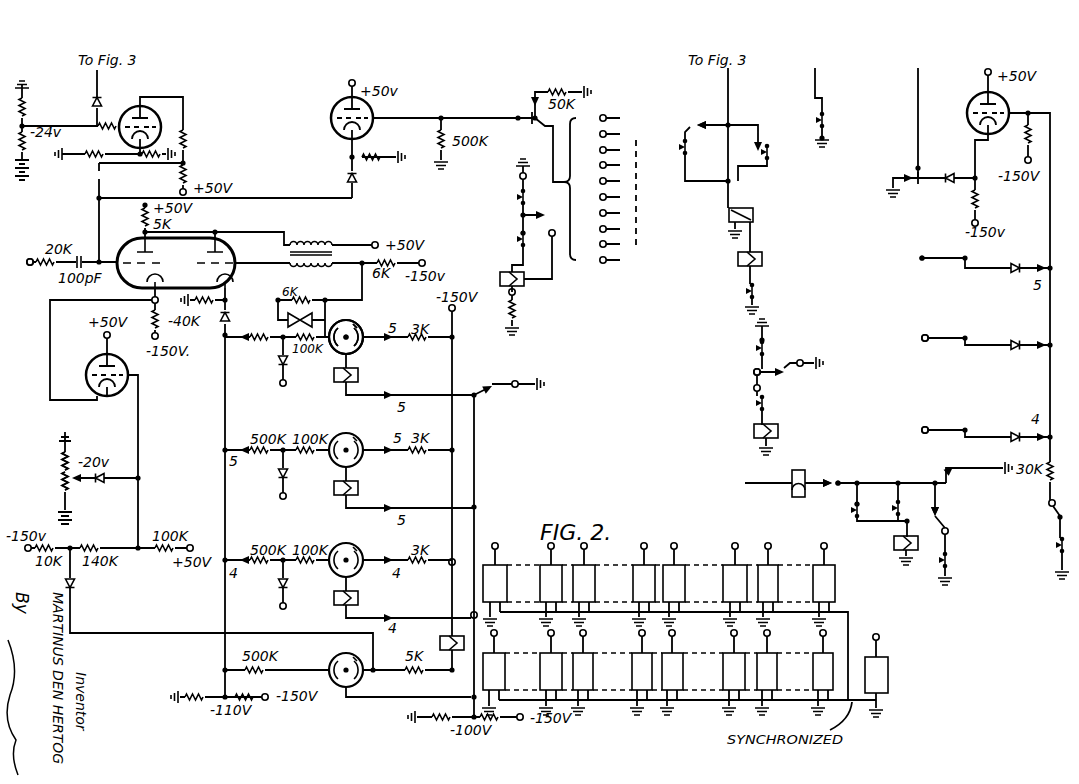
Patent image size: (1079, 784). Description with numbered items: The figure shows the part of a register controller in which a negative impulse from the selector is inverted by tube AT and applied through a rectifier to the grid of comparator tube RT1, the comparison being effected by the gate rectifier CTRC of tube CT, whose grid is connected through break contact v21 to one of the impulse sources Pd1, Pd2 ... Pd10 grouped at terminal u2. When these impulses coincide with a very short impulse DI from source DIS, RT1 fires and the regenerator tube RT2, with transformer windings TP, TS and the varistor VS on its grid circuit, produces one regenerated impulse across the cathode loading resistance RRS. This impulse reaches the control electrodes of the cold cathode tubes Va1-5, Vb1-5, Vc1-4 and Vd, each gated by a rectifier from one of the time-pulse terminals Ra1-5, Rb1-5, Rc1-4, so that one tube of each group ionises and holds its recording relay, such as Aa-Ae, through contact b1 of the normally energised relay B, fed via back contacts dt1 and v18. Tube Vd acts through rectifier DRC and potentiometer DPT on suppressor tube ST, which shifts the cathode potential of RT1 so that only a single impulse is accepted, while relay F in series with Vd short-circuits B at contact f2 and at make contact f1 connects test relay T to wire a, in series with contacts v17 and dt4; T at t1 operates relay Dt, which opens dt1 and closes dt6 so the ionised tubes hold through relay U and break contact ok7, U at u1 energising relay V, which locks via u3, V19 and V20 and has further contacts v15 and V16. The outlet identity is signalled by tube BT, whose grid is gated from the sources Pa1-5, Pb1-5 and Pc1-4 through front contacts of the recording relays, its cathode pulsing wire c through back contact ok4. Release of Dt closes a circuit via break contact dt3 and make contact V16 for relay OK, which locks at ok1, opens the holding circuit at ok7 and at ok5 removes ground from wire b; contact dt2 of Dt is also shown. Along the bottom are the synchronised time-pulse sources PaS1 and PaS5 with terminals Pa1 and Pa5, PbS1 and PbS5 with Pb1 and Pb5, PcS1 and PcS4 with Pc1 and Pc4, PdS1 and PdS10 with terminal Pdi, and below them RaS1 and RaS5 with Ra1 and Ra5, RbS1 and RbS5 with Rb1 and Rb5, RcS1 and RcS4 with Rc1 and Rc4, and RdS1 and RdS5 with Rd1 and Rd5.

The input tube with diode AT is at (127, 110).
The first triode of double tube RT1 is at (169, 254).
The second triode of double tube RT2 is at (234, 262).
The input terminal / dial input DI is at (459, 451).
The start tube ST is at (91, 375).
The pulse transformer TP is at (311, 243).
The transformer secondary resistor TS is at (307, 286).
The voltage stabiliser (bidirectional diode) VS is at (278, 319).
The register relay thyratron RRS is at (351, 318).
The thyratrons Va1 to Va5 Va1-5 is at (372, 341).
The relays Aa to Ae Aa-Ae is at (358, 375).
The terminals Ra1 to Ra5 Ra1-5 is at (287, 380).
The thyratrons Vb1 to Vb5 Vb1-5 is at (356, 440).
The terminals Rb1 to Rb5 Rb1-5 is at (287, 493).
The thyratrons Vc1 to Vc4 Vc1-4 is at (358, 551).
The terminals Rc1 to Rc4 Rc1-4 is at (294, 602).
The thyratron Vd is at (346, 661).
The relay F is at (440, 637).
The potentiometer DPT is at (72, 546).
The diode DRC is at (92, 586).
The control tube CT is at (335, 118).
The control tube diode CTRC is at (377, 180).
The contact v21 is at (544, 119).
The terminal Pd1 is at (627, 117).
The terminal Pd2 is at (628, 135).
The terminal Pd10 is at (730, 409).
The terminal group u2 is at (654, 194).
The contact v18 is at (538, 196).
The contact f2 is at (536, 239).
The contact dt1 is at (496, 229).
The relay B is at (500, 282).
The contact b1 is at (513, 392).
The lead a to Fig. 3 a is at (736, 84).
The lead b is at (823, 83).
The lead c is at (926, 84).
The contact v17 is at (710, 117).
The contact f1 is at (700, 153).
The contact dt4 is at (782, 154).
The contact ok5 is at (838, 123).
The relay T is at (752, 215).
The relay Dt is at (764, 256).
The contact t1 is at (766, 289).
The contact ok4 is at (933, 188).
The tube BT is at (1001, 110).
The terminals Pa1 to Pa5 Pa1-5 is at (886, 260).
The terminals Pb1 to Pb5 Pb1-5 is at (888, 337).
The terminals Pc1 to Pc4 Pc1-4 is at (890, 428).
The contact dt6 is at (965, 480).
The contact v15 is at (1039, 510).
The contact dt2 is at (1042, 558).
The contact dt3 is at (778, 346).
The contact ok1 is at (783, 380).
The contact V16 is at (778, 402).
The relay OK is at (785, 430).
The relay U is at (799, 473).
The contact ok7 is at (839, 469).
The contact V20 is at (851, 521).
The contact u1 is at (908, 501).
The relay V is at (897, 548).
The contact V19 is at (956, 506).
The contact u3 is at (963, 561).
The relay PaS1 is at (506, 575).
The terminal Pa1 is at (489, 534).
The relay PaS5 is at (536, 583).
The terminal Pa5 is at (561, 549).
The relay PbS1 is at (601, 583).
The terminal Pb1 is at (598, 549).
The relay PbS5 is at (652, 578).
The terminal Pb5 is at (644, 534).
The relay PcS1 is at (690, 578).
The terminal Pc1 is at (686, 536).
The relay PcS4 is at (741, 565).
The terminal Pc4 is at (726, 533).
The relay PdS1 is at (781, 576).
The terminal Pd1 Pdi is at (780, 533).
The relay PdS10 is at (835, 588).
The relay RaS1 is at (505, 663).
The terminal Ra1 is at (508, 626).
The relay RaS5 is at (535, 671).
The terminal Ra5 is at (562, 638).
The relay RbS1 is at (601, 671).
The terminal Rb1 is at (598, 638).
The relay RbS5 is at (642, 685).
The terminal Rb5 is at (629, 627).
The relay RcS1 is at (688, 664).
The terminal Rc1 is at (687, 628).
The relay RcS4 is at (716, 671).
The terminal Rc4 is at (746, 640).
The relay RdS1 is at (781, 666).
The terminal Rd1 is at (782, 630).
The relay RdS5 is at (808, 673).
The terminal Rd5 is at (826, 635).
The relay DIS is at (888, 674).